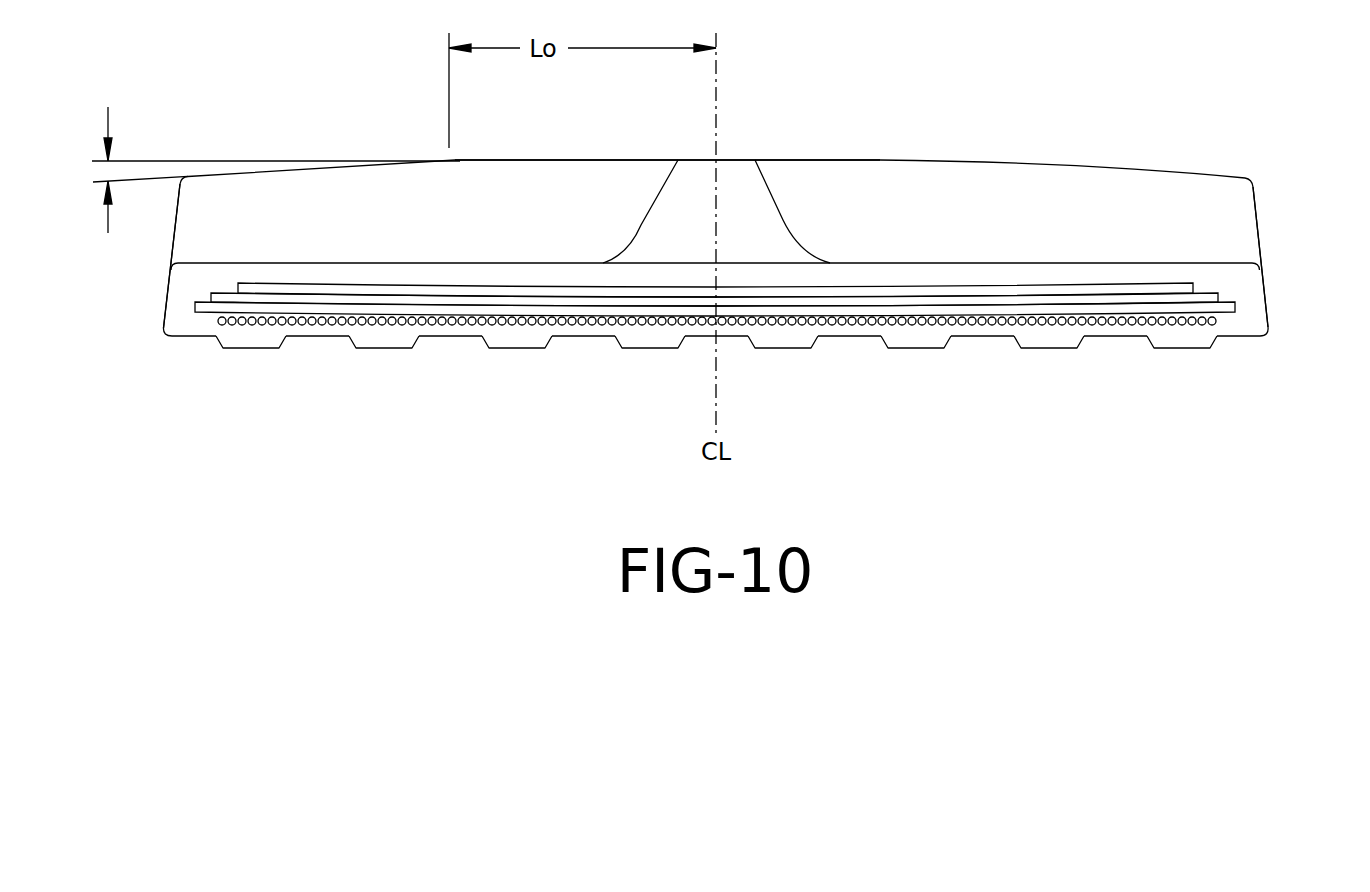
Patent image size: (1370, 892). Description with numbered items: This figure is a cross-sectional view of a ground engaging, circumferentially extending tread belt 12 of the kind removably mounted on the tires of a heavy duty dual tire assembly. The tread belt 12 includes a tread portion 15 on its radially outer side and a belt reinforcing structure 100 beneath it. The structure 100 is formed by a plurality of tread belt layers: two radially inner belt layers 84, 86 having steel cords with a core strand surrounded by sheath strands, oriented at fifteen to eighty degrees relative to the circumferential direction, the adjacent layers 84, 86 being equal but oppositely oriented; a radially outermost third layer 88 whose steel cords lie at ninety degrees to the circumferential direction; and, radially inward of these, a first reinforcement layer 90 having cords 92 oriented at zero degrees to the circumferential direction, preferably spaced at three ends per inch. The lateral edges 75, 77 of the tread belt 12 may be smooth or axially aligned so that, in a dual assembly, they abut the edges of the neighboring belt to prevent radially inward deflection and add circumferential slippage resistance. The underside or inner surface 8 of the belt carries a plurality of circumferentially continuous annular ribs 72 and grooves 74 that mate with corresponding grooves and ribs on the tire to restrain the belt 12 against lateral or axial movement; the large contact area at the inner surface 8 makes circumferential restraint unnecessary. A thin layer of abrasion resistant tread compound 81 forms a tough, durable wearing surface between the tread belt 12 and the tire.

The tread belt 12 is at (711, 259).
The tread portion 15 is at (583, 160).
The lateral edge 75 is at (172, 242).
The lateral edge 77 is at (1258, 218).
The inner surface 8 is at (716, 380).
The abrasion resistant tread compound 81 is at (716, 380).
The annular rib 72 is at (517, 348).
The groove 74 is at (587, 337).
The radially inner belt layer 84 is at (1058, 312).
The radially inner belt layer 86 is at (990, 302).
The radially outermost third layer 88 is at (928, 292).
The first reinforcement layer 90 is at (717, 267).
The cords 92 is at (468, 315).
The belt reinforcing structure 100 is at (715, 201).